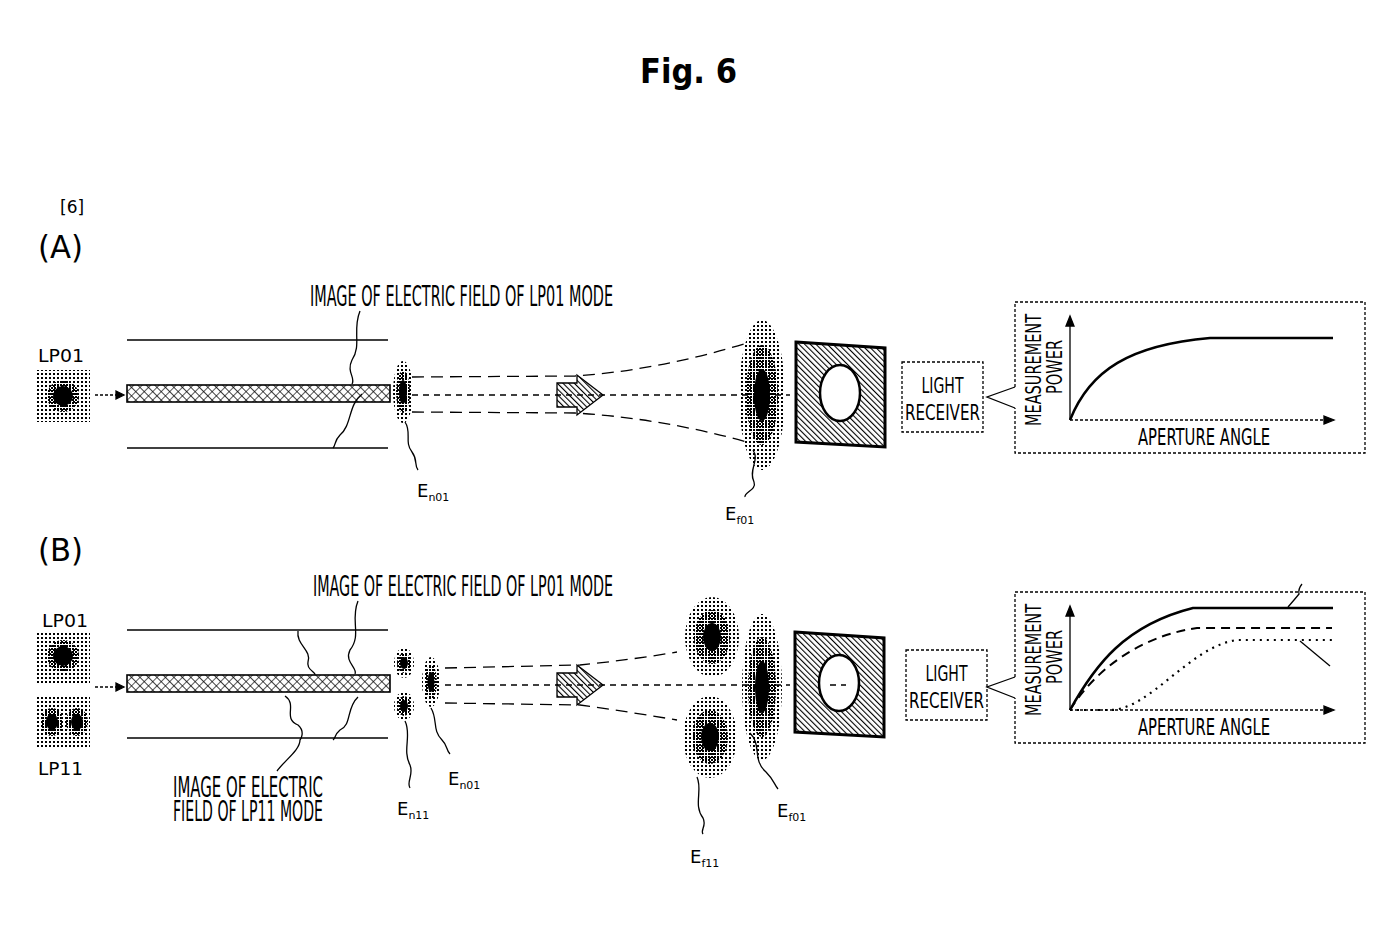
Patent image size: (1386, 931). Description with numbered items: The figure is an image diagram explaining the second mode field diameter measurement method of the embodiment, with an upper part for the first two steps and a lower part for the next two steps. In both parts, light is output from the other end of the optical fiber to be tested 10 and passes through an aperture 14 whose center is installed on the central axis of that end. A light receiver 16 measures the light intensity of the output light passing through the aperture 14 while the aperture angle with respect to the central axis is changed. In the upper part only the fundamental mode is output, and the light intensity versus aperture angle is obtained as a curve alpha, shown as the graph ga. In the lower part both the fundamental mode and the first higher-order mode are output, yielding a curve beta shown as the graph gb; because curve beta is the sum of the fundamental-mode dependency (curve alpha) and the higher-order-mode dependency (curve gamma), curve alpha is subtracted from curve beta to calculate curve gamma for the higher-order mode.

The optical fiber to be tested 10 is at (233, 340).
The aperture 14 is at (841, 343).
The light receiver 16 is at (945, 362).
The graph ga is at (1128, 302).
The graph gb is at (1128, 590).